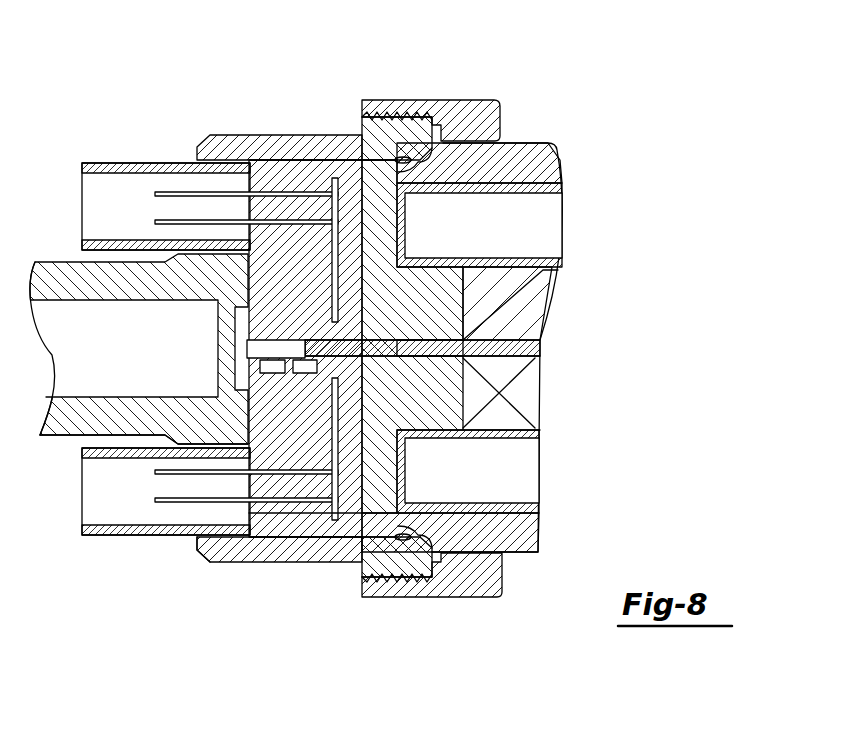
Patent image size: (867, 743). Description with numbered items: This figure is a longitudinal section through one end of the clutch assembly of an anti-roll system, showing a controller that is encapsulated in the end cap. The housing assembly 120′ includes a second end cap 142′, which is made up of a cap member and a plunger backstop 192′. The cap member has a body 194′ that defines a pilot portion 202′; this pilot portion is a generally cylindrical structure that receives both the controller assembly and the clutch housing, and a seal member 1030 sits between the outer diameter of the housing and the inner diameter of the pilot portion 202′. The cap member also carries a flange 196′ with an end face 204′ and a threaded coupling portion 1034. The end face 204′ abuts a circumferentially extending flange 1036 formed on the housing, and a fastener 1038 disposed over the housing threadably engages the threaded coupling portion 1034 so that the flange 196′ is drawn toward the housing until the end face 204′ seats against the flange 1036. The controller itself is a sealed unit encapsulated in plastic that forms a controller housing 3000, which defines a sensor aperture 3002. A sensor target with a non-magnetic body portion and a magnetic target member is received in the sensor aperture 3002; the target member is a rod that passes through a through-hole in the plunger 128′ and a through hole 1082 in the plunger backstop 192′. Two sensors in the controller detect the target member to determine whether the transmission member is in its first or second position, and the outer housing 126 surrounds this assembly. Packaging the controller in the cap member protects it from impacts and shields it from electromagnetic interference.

The second end cap 142′ is at (228, 135).
The body 194′ is at (198, 555).
The plunger backstop 192′ is at (352, 510).
The sensor aperture 3002 is at (265, 333).
The controller housing 3000 is at (275, 457).
The fastener 1038 is at (460, 108).
The circumferentially extending flange 1036 is at (435, 125).
The threaded coupling portion 1034 is at (375, 130).
The seal member 1030 is at (412, 172).
The housing 126 is at (530, 215).
The through hole 1082 is at (412, 375).
The plunger 128′ is at (540, 310).
The housing assembly 120′ is at (520, 524).
The end face 204′ is at (470, 565).
The flange 196′ is at (405, 570).
The pilot portion 202′ is at (295, 545).